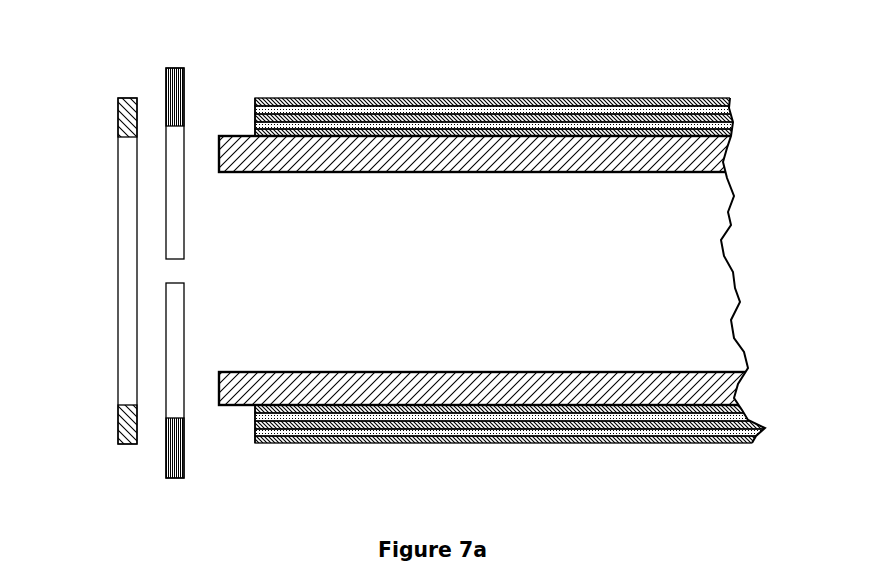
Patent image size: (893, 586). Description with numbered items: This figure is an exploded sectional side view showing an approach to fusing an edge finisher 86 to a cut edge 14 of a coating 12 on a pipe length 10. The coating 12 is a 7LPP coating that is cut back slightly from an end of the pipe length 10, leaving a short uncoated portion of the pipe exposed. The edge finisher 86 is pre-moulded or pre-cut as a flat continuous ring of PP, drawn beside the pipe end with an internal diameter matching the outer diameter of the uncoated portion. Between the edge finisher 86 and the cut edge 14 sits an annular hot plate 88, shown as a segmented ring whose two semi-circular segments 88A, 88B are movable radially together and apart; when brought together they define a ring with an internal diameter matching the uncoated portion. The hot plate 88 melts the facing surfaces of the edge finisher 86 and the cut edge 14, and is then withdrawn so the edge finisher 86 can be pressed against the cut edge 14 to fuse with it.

The pipe length 10 is at (695, 218).
The coating 12 is at (567, 108).
The cut edge 14 is at (255, 113).
The edge finisher 86 is at (127, 110).
The hot plate 88 is at (174, 280).
The segment 88A is at (173, 85).
The segment 88B is at (172, 451).